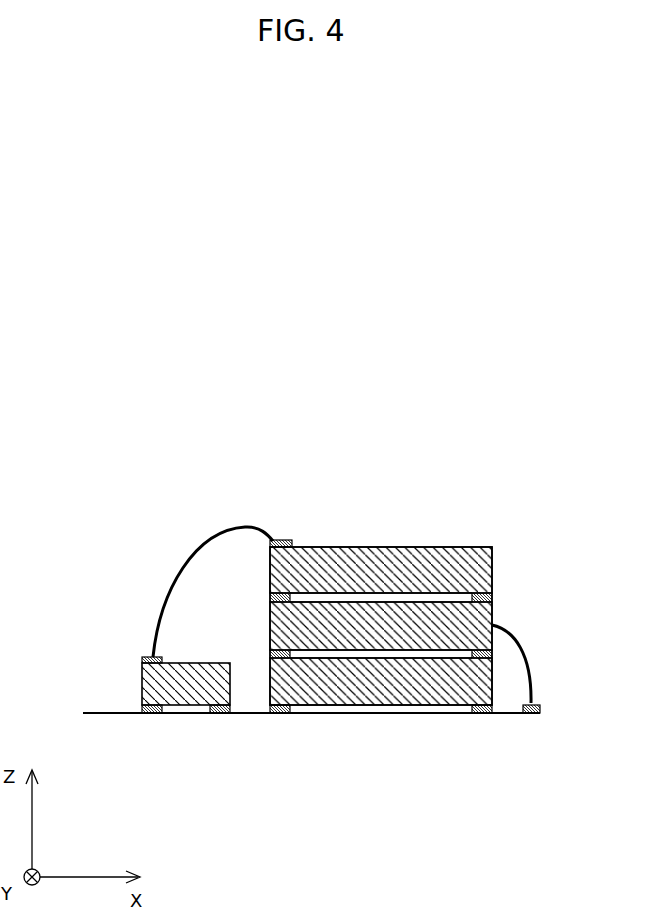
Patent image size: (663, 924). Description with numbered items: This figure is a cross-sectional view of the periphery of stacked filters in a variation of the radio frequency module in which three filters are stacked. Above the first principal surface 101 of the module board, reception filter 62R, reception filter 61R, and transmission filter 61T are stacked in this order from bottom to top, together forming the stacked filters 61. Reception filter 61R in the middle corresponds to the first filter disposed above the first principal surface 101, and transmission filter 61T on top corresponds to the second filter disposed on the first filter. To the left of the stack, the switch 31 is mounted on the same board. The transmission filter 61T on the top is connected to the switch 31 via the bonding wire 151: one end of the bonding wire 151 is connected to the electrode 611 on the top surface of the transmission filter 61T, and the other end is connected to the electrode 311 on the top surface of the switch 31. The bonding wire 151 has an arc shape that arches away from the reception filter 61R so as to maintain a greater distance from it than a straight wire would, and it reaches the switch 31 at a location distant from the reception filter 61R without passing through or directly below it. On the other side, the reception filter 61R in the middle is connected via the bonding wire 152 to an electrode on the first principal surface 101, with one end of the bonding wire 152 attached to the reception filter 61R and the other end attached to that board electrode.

The first principal surface 101 is at (105, 713).
The switch 31 is at (192, 663).
The electrode 311 is at (145, 657).
The stacked filters 61 is at (381, 617).
The transmission filter 61T is at (350, 550).
The reception filter 61R is at (389, 601).
The electrode 611 is at (287, 540).
The reception filter 62R is at (388, 705).
The bonding wire 151 is at (205, 532).
The bonding wire 152 is at (525, 650).